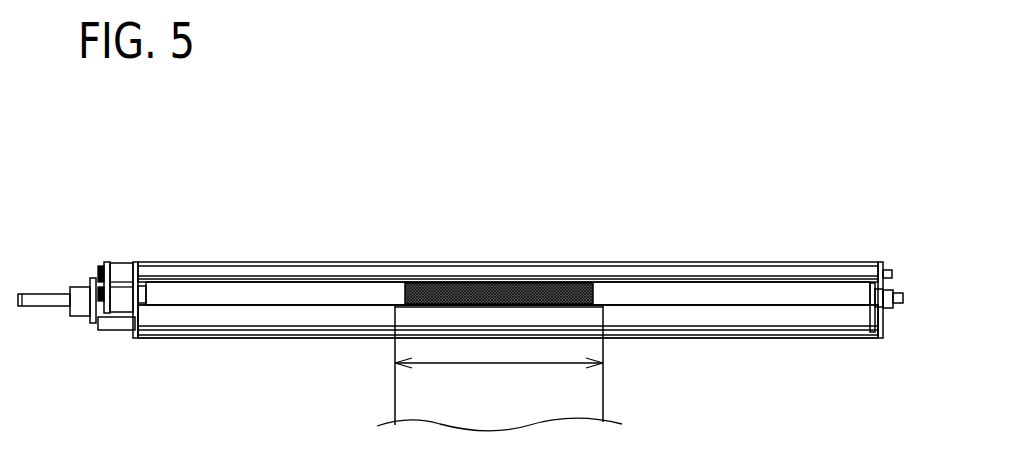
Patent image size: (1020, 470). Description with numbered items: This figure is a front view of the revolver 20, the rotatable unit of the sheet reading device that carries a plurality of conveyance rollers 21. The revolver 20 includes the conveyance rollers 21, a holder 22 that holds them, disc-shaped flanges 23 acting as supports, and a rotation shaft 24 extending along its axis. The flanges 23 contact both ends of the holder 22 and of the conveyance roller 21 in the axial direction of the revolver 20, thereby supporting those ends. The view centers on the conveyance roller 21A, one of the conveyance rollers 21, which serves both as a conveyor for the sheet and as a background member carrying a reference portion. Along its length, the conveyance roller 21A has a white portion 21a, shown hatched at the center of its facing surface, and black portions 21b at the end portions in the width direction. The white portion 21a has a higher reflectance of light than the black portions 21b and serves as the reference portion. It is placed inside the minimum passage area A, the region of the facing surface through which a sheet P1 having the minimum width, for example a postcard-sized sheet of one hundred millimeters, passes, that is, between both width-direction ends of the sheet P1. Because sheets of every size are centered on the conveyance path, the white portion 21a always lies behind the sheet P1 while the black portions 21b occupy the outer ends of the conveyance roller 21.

The revolver 20 is at (594, 221).
The conveyance roller 21 is at (508, 301).
The conveyance roller 21A is at (304, 297).
The white portion 21a is at (485, 293).
The black portion 21b is at (270, 293).
The holder 22 is at (216, 318).
The flange 23 is at (138, 336).
The rotation shaft 24 is at (44, 300).
The sheet having the minimum width P1 is at (592, 393).
The minimum passage area A is at (499, 352).